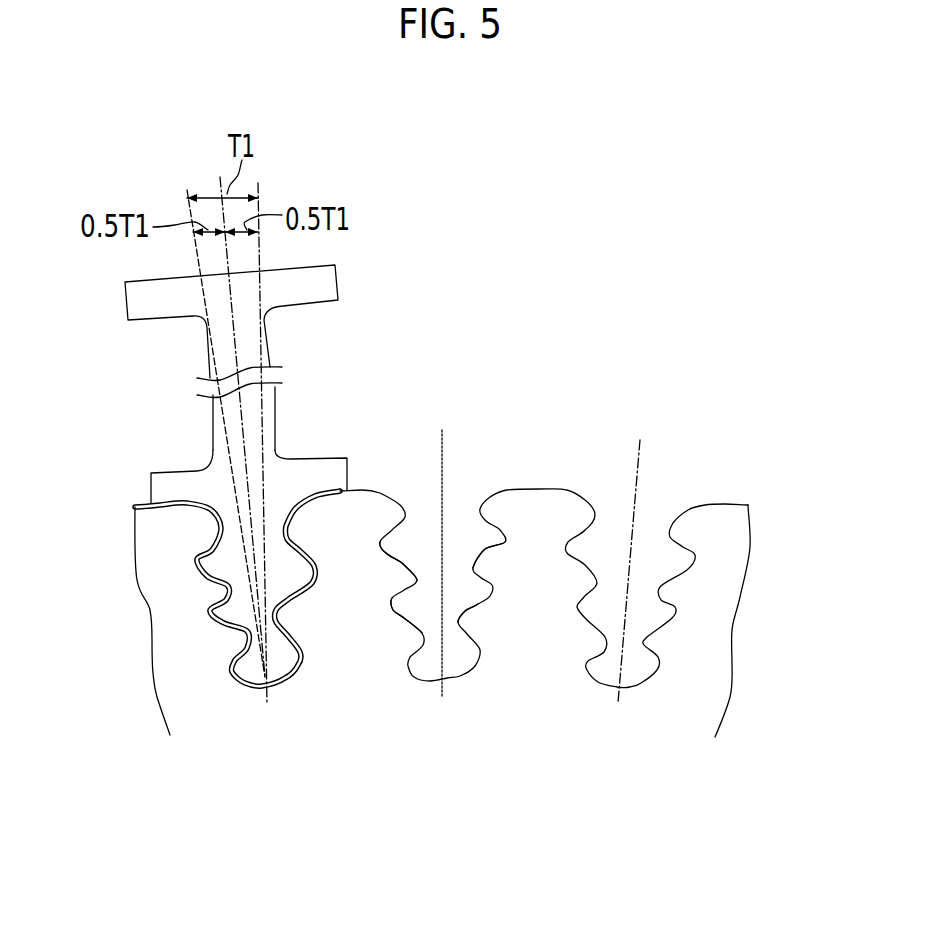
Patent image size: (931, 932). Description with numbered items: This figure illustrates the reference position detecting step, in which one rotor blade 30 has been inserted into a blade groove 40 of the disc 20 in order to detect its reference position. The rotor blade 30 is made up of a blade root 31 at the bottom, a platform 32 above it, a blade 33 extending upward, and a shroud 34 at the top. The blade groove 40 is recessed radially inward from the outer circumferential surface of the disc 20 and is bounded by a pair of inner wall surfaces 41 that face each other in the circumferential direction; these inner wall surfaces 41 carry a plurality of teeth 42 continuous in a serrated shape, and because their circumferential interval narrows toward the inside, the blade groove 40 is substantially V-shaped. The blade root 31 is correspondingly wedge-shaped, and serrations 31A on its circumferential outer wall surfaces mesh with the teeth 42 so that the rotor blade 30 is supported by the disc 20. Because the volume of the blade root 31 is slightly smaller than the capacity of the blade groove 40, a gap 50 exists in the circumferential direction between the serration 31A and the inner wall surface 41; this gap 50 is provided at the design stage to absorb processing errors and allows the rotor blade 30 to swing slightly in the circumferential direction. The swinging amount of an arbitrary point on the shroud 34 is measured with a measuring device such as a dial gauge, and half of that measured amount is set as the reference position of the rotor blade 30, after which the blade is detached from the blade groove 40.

The disc 20 is at (478, 610).
The rotor blade 30 is at (261, 481).
The blade root 31 is at (277, 665).
The serration 31A is at (197, 553).
The platform 32 is at (323, 472).
The blade 33 is at (277, 410).
The shroud 34 is at (140, 298).
The blade groove 40 is at (232, 665).
The inner wall surface 41 is at (397, 553).
The tooth 42 is at (418, 580).
The gap 50 is at (213, 610).